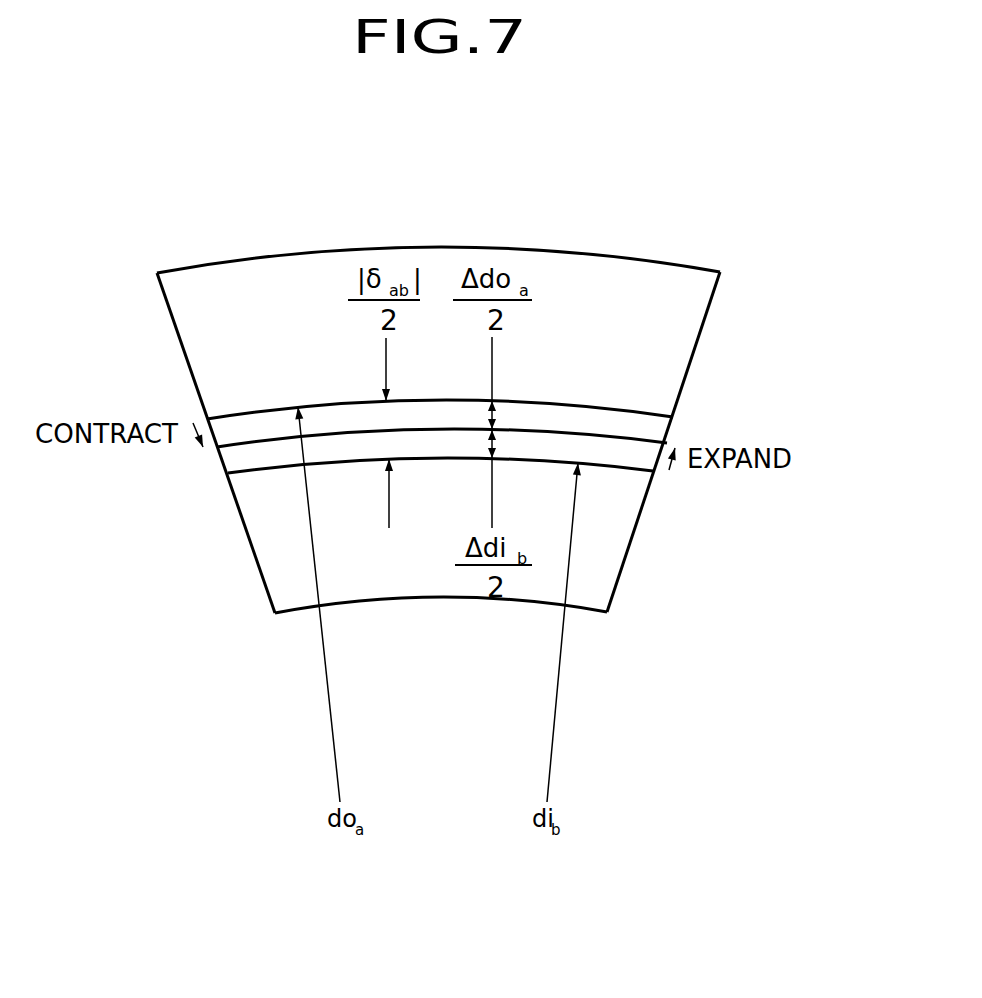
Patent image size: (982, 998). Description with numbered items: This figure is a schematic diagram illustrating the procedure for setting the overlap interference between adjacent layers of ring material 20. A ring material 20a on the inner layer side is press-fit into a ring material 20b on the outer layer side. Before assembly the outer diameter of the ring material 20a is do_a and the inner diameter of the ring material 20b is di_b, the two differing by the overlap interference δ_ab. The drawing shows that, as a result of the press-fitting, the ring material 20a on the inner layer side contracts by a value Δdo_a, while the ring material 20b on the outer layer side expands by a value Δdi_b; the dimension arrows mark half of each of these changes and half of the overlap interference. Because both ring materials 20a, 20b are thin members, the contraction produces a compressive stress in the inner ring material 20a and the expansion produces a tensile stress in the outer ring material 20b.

The ring material 20 is at (438, 442).
The ring material on the inner layer side 20a is at (295, 600).
The ring material on the outer layer side 20b is at (665, 277).